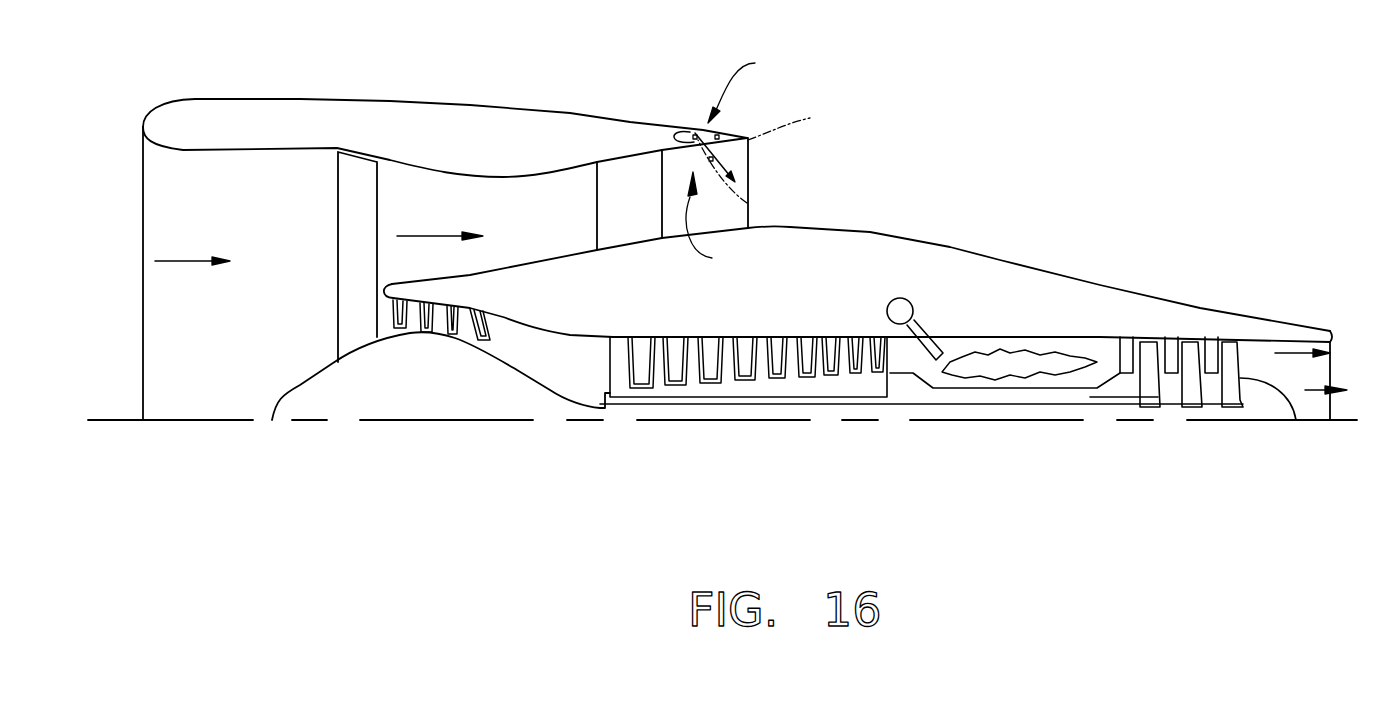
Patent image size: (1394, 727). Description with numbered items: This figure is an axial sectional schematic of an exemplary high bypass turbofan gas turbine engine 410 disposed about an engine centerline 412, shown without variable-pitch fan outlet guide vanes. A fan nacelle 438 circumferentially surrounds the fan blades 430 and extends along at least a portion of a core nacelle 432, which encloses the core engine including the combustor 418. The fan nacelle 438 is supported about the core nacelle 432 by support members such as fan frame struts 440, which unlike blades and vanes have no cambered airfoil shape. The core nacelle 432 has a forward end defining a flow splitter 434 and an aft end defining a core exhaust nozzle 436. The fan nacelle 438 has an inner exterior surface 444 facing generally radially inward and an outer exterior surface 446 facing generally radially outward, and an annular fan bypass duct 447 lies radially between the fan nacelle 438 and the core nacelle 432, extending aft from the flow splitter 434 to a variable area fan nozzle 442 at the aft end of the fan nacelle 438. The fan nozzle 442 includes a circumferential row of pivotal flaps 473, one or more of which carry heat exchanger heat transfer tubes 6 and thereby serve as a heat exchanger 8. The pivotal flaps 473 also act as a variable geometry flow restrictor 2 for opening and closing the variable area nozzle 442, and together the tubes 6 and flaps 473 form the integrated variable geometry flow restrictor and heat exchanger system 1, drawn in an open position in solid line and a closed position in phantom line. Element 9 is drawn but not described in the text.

The bypass turbofan gas turbine engine 410 is at (905, 83).
The fan nacelle 438 is at (445, 126).
The outer exterior surface 446 is at (232, 100).
The inner exterior surface 444 is at (273, 134).
The fan blades 430 is at (367, 150).
The annular fan bypass duct 447 is at (433, 202).
The fan frame struts 440 is at (652, 207).
The variable area fan nozzle 442 is at (750, 172).
The core nacelle 432 is at (823, 274).
The flow splitter 434 is at (385, 283).
The engine centerline 412 is at (402, 418).
The combustor 418 is at (1007, 336).
The core exhaust nozzle 436 is at (1332, 341).
The heat exchanger heat transfer tubes 6 is at (700, 130).
The sensor 9 is at (720, 135).
The variable geometry flow restrictor 2 is at (730, 135).
The heat exchanger 8 is at (740, 87).
The pivotal flaps 473 is at (801, 122).
The integrated variable geometry flow restrictor and heat exchanger system 1 is at (706, 222).